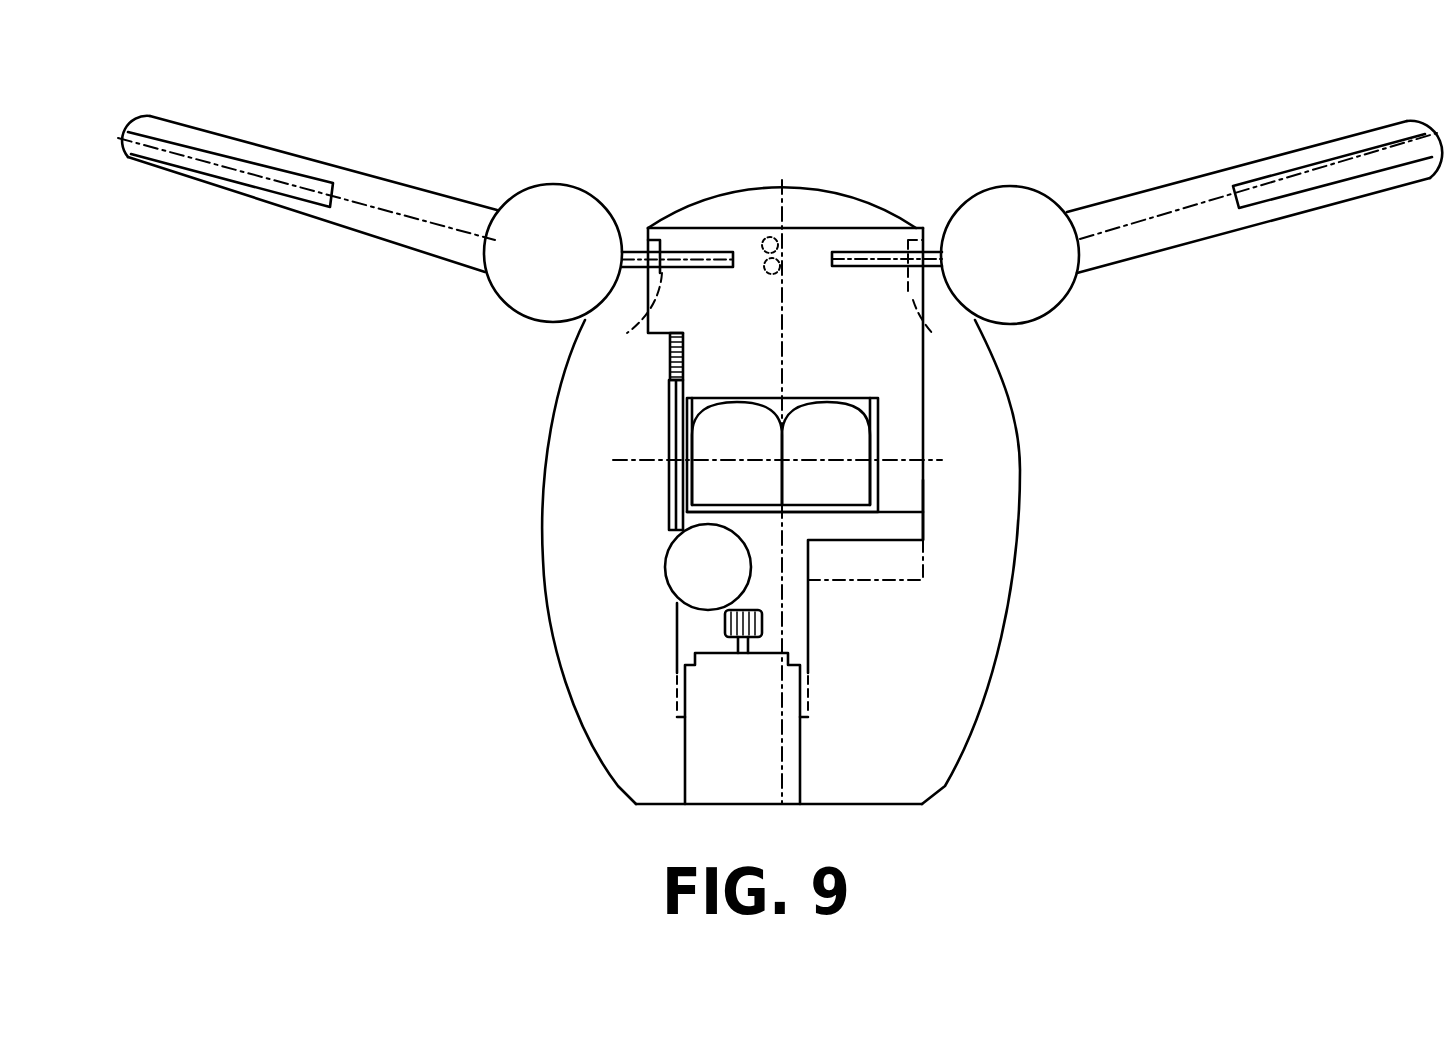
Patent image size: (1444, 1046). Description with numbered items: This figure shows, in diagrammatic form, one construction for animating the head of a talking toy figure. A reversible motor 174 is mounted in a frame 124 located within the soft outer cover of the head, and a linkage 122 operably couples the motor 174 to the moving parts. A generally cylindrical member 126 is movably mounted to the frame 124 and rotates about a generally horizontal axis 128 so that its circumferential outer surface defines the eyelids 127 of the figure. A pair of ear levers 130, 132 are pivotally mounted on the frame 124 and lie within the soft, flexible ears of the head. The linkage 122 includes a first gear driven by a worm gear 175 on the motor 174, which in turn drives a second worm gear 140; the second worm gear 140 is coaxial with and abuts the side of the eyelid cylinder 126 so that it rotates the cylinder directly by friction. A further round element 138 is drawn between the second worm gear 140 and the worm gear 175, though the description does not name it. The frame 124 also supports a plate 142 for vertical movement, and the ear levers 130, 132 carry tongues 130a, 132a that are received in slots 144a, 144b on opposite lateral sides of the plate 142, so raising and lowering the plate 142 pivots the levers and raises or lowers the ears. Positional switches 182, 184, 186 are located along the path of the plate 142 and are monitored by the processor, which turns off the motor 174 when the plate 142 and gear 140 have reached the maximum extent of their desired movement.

The linkage 122 is at (632, 443).
The frame 124 is at (1018, 437).
The cylindrical member 126 is at (802, 398).
The eyelids 127 is at (766, 420).
The horizontal axis 128 is at (893, 452).
The ear lever 130 is at (1175, 196).
The tongue 130a is at (876, 250).
The ear lever 132 is at (407, 198).
The tongue 132a is at (684, 250).
The ball 138 is at (666, 568).
The second gear 140 is at (667, 506).
The plate 142 is at (923, 492).
The slot 144a is at (947, 305).
The slot 144b is at (622, 304).
The reversible motor 174 is at (790, 737).
The worm gear 175 is at (767, 622).
The switch 182 is at (770, 274).
The switch 184 is at (764, 242).
The switch 186 is at (770, 252).